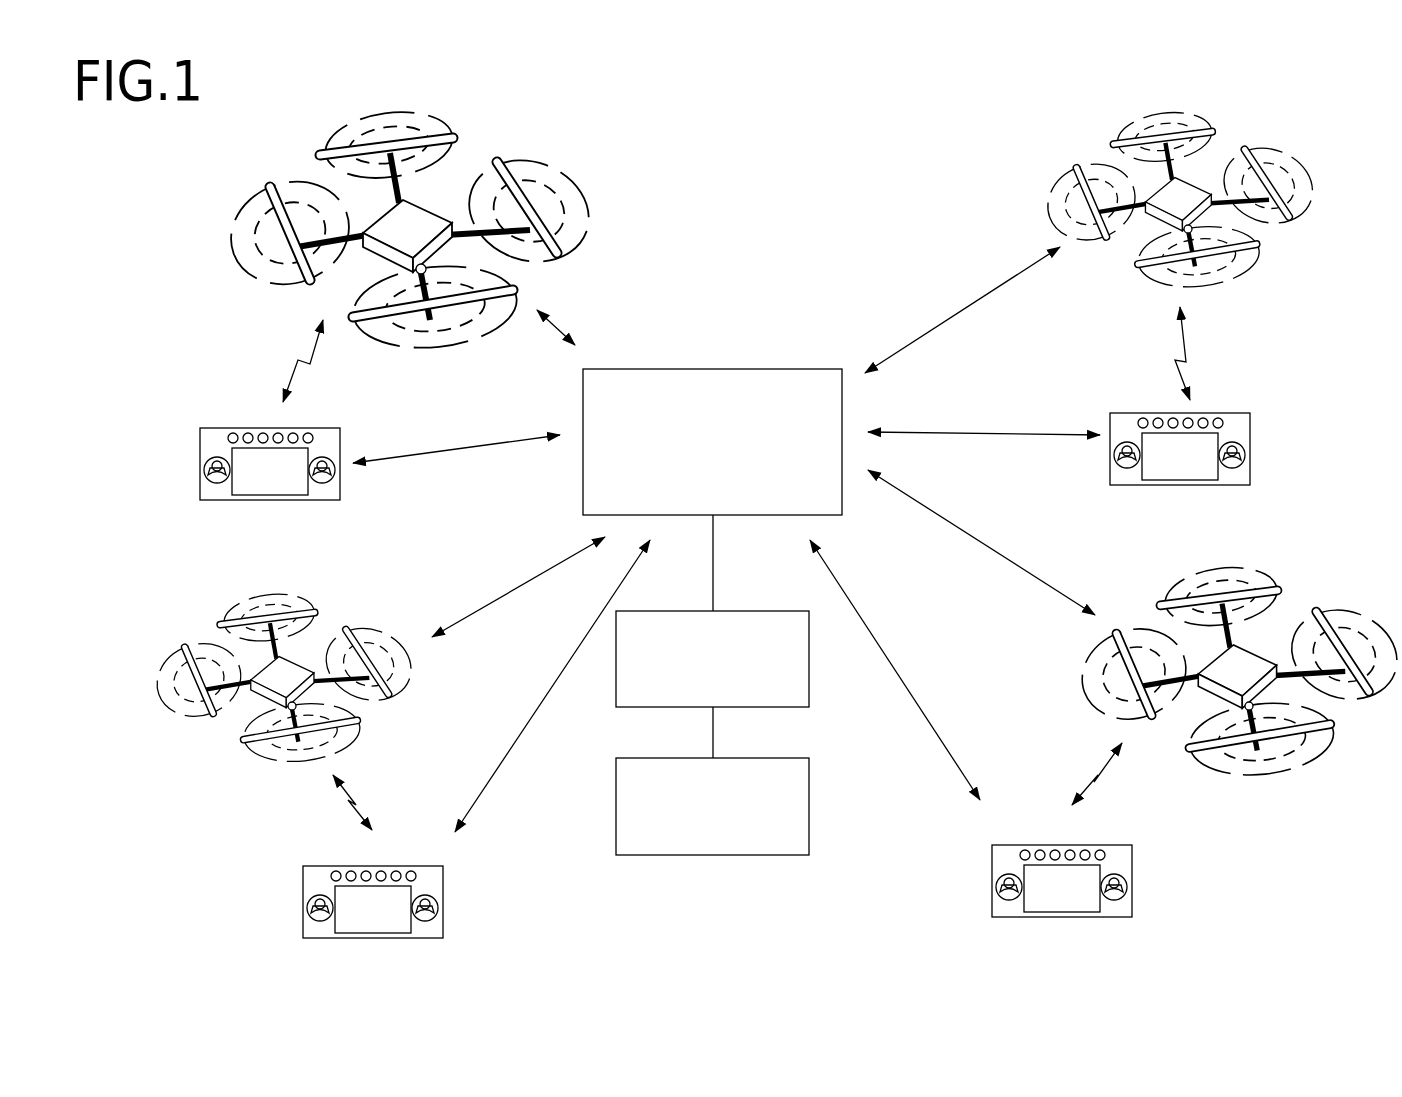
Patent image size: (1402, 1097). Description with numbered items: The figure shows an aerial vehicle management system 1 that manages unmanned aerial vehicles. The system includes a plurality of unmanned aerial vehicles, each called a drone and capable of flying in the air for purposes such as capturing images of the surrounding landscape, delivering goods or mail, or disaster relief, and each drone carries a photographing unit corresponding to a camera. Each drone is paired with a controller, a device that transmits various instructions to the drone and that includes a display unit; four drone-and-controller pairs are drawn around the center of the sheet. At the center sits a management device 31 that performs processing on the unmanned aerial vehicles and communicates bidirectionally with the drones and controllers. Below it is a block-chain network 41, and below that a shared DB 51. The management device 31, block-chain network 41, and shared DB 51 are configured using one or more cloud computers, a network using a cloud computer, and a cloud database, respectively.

The aerial vehicle management system 1 is at (844, 127).
The management device 31 is at (760, 367).
The block-chain network 41 is at (744, 609).
The shared DB 51 is at (744, 756).